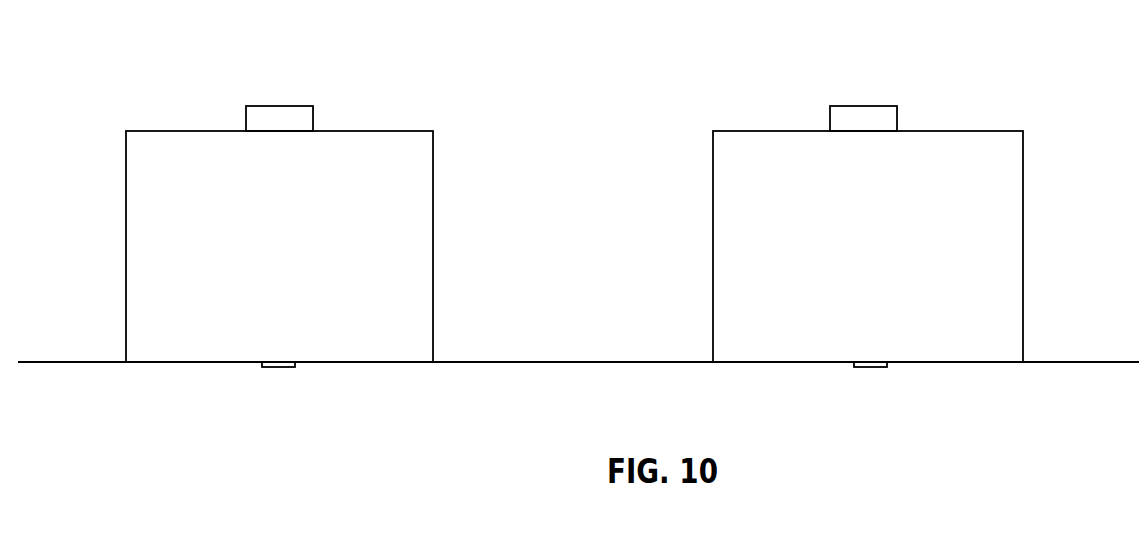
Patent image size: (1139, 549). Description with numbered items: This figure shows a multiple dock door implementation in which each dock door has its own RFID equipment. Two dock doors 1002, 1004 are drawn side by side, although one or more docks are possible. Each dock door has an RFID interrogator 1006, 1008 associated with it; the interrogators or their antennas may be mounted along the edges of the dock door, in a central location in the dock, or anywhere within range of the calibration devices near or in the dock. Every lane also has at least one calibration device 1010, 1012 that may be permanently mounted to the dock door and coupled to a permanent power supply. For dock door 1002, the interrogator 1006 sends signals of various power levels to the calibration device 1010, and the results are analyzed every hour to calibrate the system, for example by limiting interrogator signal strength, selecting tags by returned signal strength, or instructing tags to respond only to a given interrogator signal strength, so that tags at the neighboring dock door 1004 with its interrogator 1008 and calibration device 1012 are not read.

The dock door 1002 is at (272, 106).
The dock door 1004 is at (858, 106).
The RFID interrogator 1006 is at (433, 138).
The RFID interrogator 1008 is at (1023, 138).
The calibration device 1010 is at (280, 367).
The calibration device 1012 is at (875, 367).